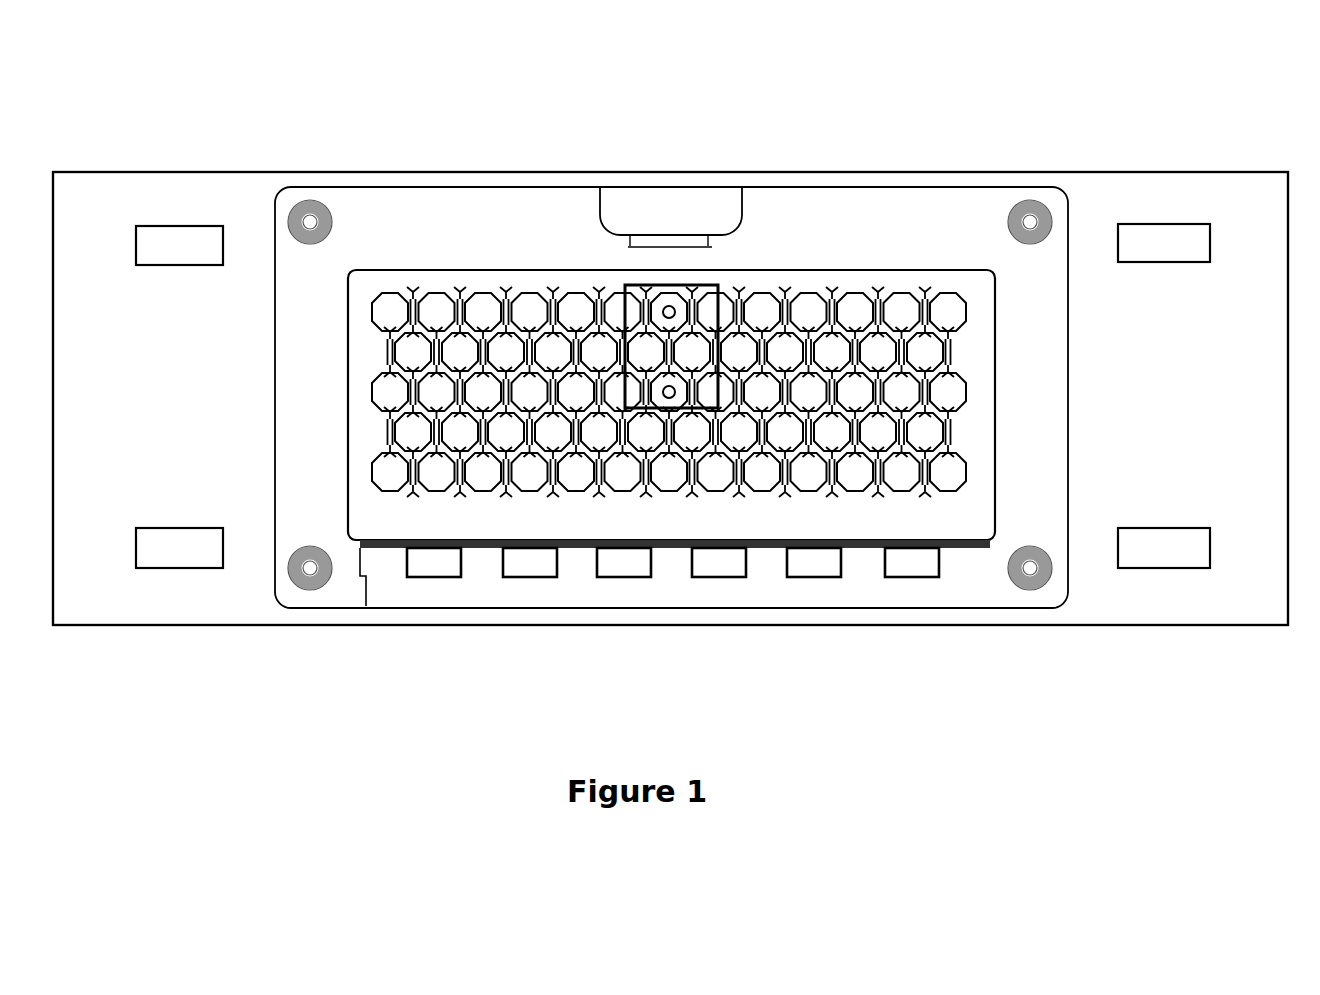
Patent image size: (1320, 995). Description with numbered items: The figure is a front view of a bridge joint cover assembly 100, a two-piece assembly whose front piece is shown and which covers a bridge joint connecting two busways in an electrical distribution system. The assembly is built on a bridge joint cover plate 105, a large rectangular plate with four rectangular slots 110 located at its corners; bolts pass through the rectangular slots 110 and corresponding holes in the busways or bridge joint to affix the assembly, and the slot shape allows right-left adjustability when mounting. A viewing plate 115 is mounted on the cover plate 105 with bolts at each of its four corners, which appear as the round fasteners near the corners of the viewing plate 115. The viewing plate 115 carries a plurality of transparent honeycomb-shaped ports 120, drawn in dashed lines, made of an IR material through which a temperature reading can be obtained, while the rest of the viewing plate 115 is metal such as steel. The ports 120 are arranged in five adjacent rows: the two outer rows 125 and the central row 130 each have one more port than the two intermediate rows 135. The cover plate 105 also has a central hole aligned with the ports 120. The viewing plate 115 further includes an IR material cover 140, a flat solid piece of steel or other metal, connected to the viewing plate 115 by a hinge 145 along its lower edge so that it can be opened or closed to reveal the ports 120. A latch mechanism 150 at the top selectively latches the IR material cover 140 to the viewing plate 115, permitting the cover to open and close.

The bridge joint cover assembly 100 is at (294, 130).
The bridge joint cover plate 105 is at (74, 475).
The rectangular slots 110 is at (196, 546).
The viewing plate 115 is at (454, 242).
The honeycomb-shaped ports 120 is at (877, 357).
The outer rows 125 is at (985, 308).
The central row 130 is at (985, 392).
The intermediate rows 135 is at (960, 350).
The IR material cover 140 is at (454, 535).
The hinge 145 is at (482, 568).
The latch mechanism 150 is at (631, 281).